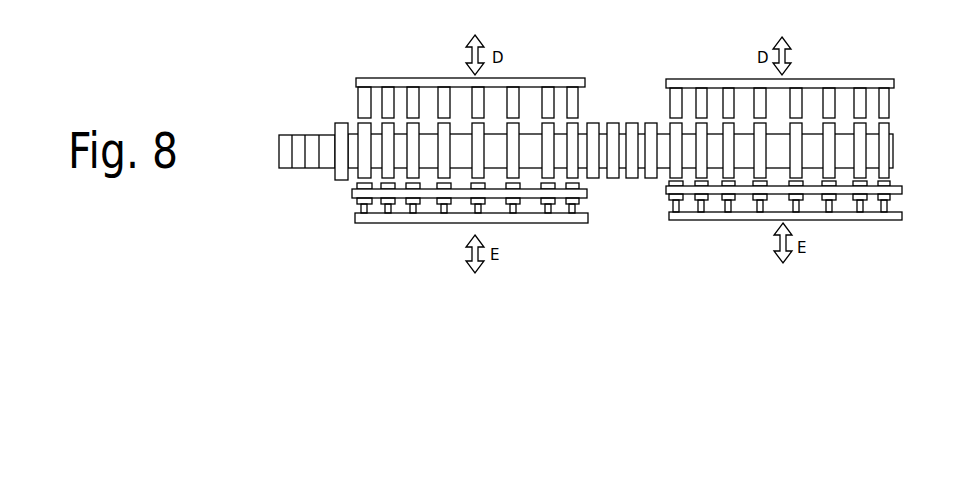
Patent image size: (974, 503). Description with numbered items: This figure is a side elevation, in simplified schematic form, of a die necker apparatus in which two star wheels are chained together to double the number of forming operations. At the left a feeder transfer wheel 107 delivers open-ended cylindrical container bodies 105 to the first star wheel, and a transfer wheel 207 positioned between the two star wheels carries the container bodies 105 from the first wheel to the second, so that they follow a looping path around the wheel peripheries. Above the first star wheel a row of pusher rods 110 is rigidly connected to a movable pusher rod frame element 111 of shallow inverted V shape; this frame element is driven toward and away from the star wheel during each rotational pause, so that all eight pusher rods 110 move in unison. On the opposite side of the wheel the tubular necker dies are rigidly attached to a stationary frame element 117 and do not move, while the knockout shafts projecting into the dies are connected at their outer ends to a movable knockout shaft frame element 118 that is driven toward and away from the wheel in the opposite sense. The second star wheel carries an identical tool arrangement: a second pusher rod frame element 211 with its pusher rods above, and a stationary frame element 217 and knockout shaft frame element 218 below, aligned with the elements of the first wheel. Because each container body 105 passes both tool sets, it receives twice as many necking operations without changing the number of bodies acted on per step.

The container body 105 is at (338, 178).
The feeder transfer wheel 107 is at (313, 140).
The pusher rods 110 is at (359, 105).
The pusher rod frame element 111 is at (533, 85).
The stationary frame element 117 is at (352, 192).
The knockout shaft frame element 118 is at (375, 217).
The transfer wheel 207 is at (642, 160).
The pusher rod frame element 211 is at (805, 82).
The stationary frame element 217 is at (666, 191).
The knockout shaft frame element 218 is at (693, 215).